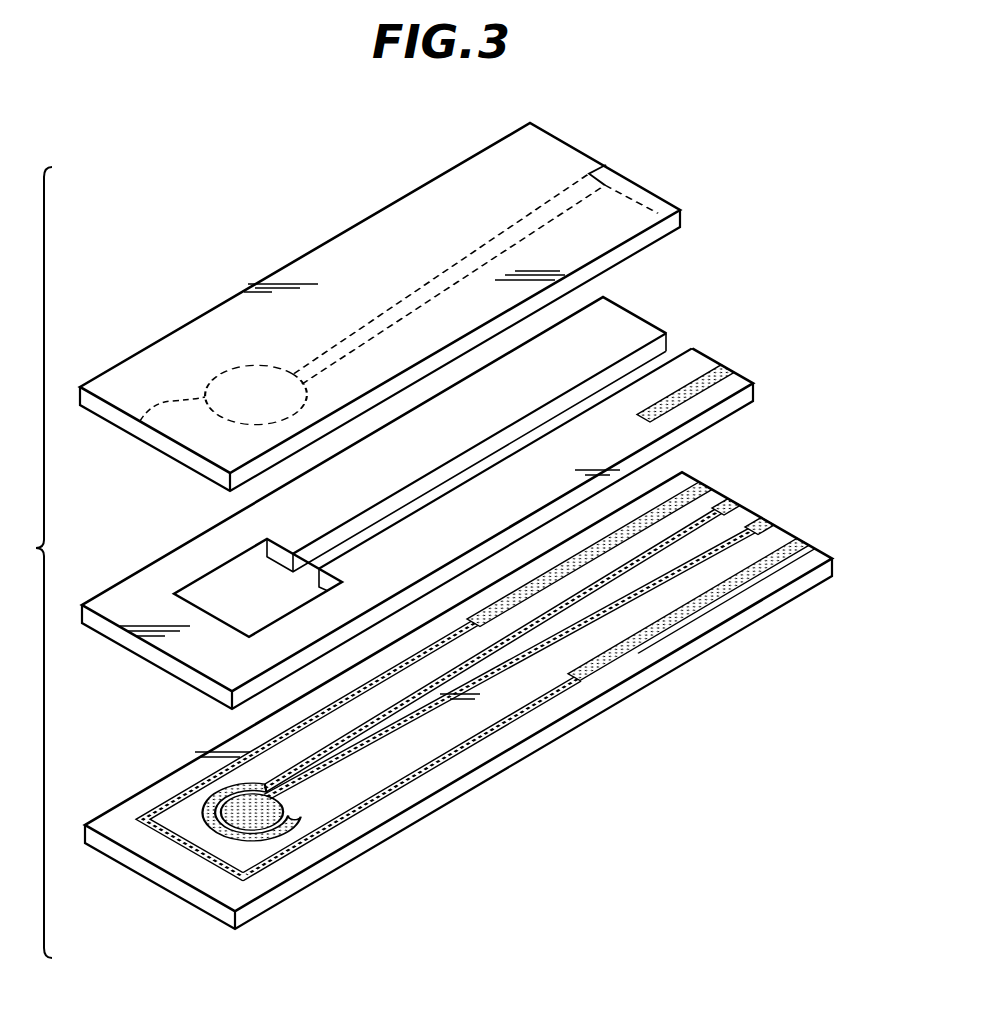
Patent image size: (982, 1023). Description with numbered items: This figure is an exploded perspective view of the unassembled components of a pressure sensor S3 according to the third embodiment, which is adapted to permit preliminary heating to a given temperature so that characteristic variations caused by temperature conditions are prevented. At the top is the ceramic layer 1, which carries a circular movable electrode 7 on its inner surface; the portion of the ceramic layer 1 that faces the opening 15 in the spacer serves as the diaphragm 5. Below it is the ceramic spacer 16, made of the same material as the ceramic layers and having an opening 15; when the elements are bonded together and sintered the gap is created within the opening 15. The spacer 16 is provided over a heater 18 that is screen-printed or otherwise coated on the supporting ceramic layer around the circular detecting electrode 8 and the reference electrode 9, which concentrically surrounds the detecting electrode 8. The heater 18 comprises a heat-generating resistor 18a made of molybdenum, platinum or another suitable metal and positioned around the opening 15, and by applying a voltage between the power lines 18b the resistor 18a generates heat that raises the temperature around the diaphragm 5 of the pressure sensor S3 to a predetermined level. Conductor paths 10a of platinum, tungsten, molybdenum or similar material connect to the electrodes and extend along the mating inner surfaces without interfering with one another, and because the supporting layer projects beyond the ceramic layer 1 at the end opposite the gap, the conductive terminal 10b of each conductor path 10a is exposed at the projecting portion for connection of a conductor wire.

The ceramic layer 1 is at (297, 266).
The diaphragm 5 is at (236, 396).
The movable electrode 7 is at (140, 421).
The detecting electrode 8 is at (275, 822).
The reference electrode 9 is at (303, 816).
The conductor paths 10a is at (440, 283).
The conductive terminals 10b is at (722, 368).
The opening 15 is at (205, 583).
The ceramic spacer 16 is at (108, 593).
The heater 18 is at (178, 848).
The heat-generating resistor 18a is at (192, 791).
The power lines 18b is at (703, 603).
The pressure sensor S3 is at (768, 780).